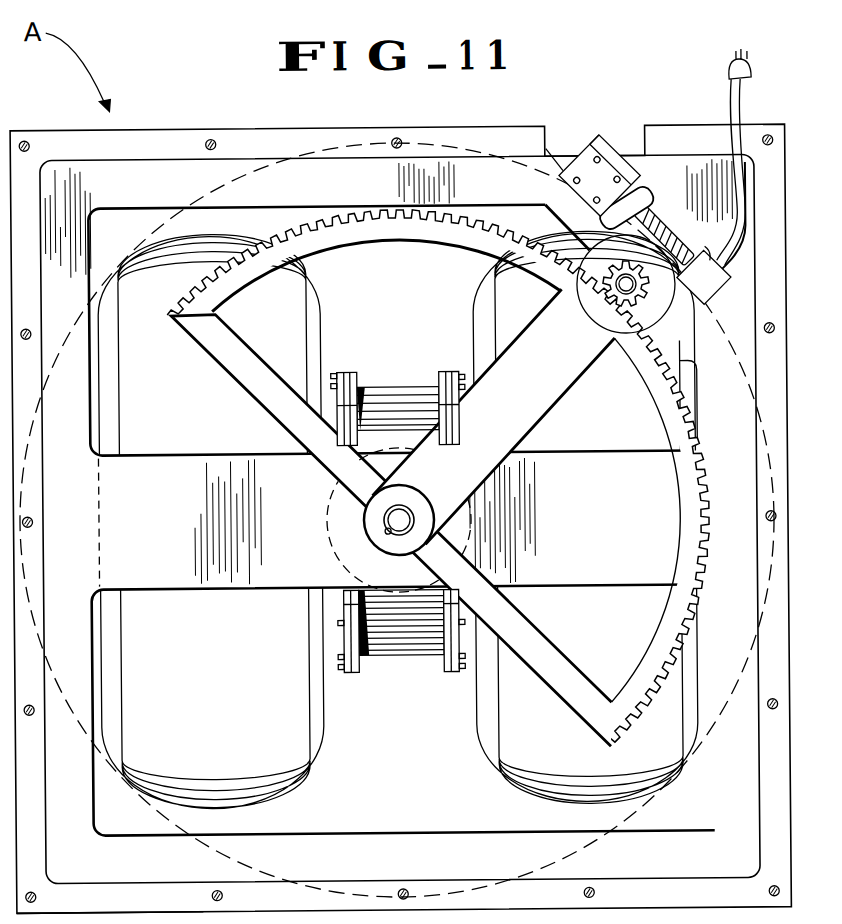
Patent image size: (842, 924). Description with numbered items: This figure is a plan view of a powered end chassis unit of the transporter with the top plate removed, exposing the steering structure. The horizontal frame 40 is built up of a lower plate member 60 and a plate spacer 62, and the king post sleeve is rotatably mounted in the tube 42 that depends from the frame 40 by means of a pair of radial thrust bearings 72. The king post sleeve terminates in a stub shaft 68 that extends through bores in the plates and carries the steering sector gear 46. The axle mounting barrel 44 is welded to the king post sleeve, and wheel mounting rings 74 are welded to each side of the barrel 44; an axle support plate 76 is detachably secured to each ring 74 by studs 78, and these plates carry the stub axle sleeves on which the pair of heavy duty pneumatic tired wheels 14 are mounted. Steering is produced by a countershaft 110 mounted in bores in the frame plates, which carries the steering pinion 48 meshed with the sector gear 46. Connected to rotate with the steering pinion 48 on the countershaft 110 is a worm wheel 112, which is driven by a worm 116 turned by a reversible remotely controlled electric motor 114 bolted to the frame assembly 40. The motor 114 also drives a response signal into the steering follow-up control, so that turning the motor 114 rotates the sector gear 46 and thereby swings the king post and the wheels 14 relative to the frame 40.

The horizontal frame 40 is at (164, 128).
The plate spacer 62 is at (254, 136).
The lower plate member 60 is at (479, 168).
The heavy duty pneumatic tired wheels 14 is at (212, 416).
The steering sector gear 46 is at (413, 238).
The tube 42 is at (335, 493).
The worm wheel 112 is at (560, 289).
The stub shaft 68 is at (402, 516).
The axle mounting barrel 44 is at (398, 387).
The wheel mounting rings 74 is at (346, 372).
The studs 78 is at (332, 385).
The axle support plate 76 is at (458, 403).
The steering pinion 48 is at (608, 292).
The countershaft 110 is at (626, 289).
The worm 116 is at (668, 226).
The reversible remotely controlled electric motor 114 is at (603, 137).
The radial thrust bearings 72 is at (128, 914).